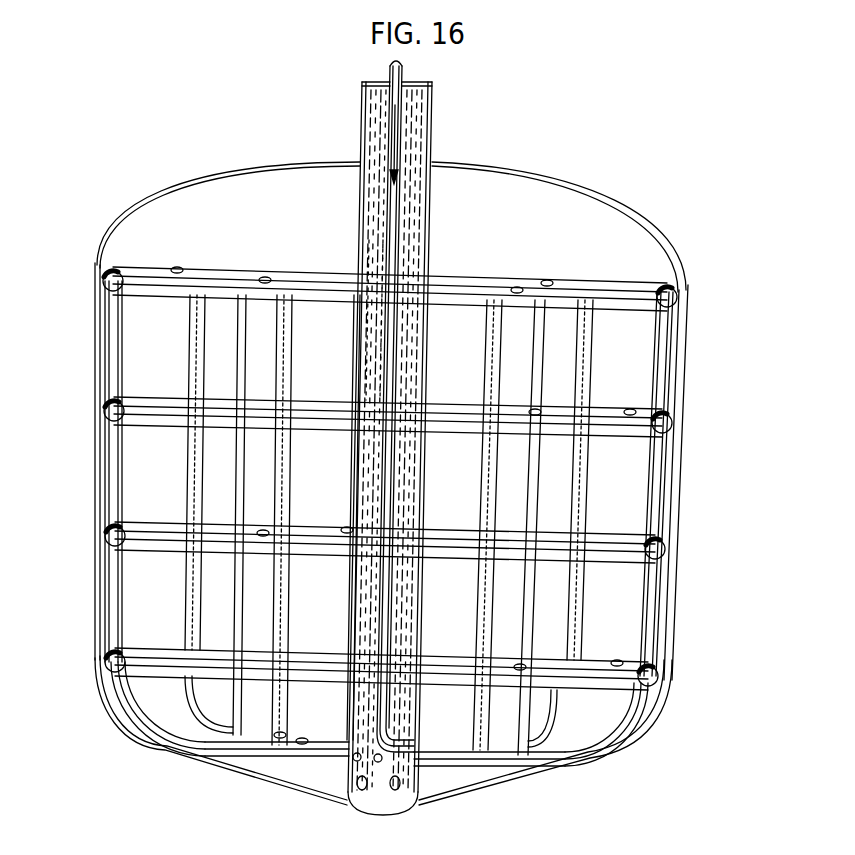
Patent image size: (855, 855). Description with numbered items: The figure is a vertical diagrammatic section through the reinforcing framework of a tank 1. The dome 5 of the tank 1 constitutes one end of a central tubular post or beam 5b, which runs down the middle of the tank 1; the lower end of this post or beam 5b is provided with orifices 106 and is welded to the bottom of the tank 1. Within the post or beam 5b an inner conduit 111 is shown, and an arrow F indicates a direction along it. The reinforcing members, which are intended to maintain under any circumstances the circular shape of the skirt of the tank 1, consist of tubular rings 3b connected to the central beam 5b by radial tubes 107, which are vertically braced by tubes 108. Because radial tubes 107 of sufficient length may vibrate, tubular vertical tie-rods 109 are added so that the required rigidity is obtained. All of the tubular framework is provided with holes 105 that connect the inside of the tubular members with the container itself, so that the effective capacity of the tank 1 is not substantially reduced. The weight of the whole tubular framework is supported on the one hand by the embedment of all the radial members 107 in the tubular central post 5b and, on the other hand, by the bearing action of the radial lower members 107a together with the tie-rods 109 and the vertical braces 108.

The tank 1 is at (573, 190).
The tubular rings 3b is at (650, 287).
The dome 5 is at (378, 137).
The tubular post or beam 5b is at (378, 257).
The flow direction arrow F is at (400, 143).
The holes 105 is at (265, 280).
The orifices 106 is at (347, 780).
The radial tubes 107 is at (562, 297).
The radial lower members 107a is at (323, 755).
The vertical braces 108 is at (197, 373).
The tubular vertical tie-rods 109 is at (241, 362).
The inner tube 111 is at (400, 102).